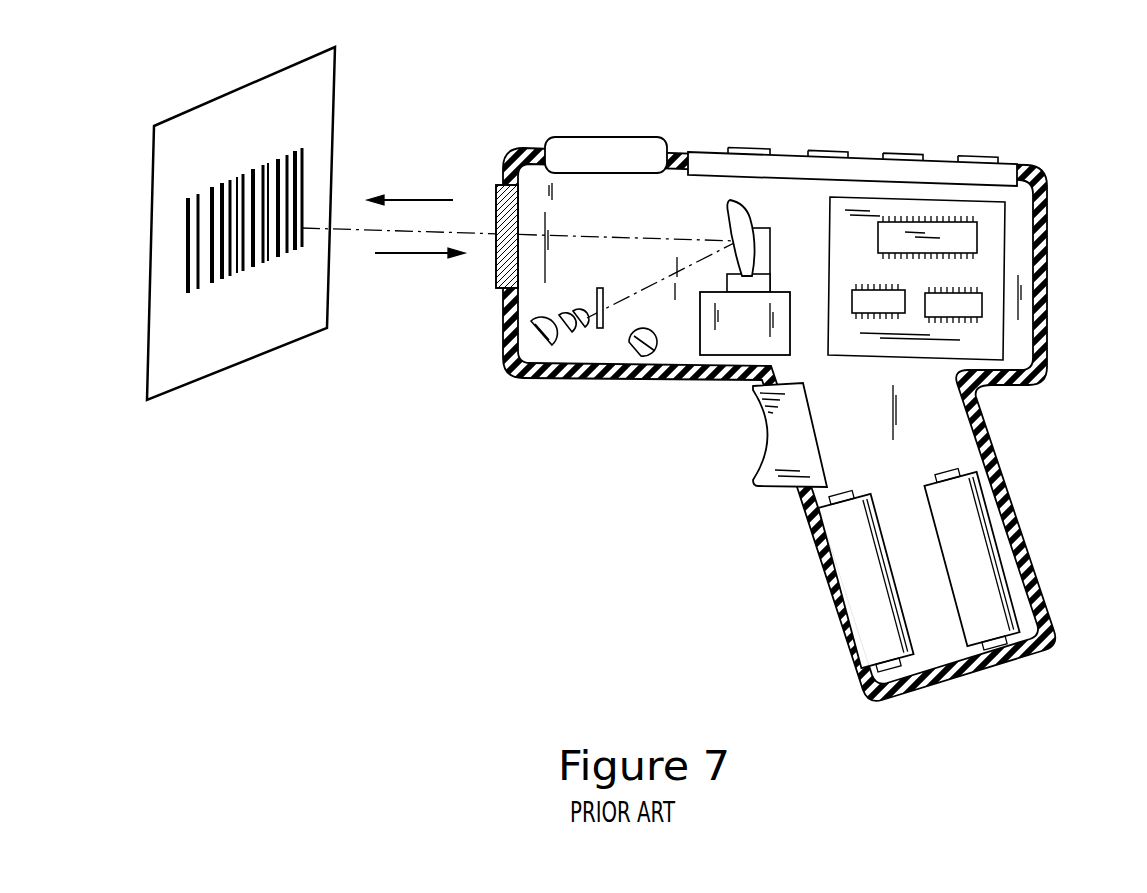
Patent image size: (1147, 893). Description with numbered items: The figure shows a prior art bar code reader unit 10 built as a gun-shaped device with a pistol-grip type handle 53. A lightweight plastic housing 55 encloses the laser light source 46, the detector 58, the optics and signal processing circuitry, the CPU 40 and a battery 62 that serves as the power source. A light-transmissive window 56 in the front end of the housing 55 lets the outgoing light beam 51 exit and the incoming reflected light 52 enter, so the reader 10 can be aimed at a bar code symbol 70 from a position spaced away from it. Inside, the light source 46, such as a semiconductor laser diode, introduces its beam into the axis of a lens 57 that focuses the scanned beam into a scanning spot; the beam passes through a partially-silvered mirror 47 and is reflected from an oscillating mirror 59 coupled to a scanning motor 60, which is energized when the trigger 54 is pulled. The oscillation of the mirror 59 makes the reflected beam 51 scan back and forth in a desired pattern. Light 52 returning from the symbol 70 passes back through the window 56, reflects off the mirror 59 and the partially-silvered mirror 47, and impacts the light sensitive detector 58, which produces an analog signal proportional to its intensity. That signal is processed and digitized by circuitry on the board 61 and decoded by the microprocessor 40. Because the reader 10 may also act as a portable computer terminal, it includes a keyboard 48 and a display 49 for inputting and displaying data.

The bar code reader unit 10 is at (612, 535).
The CPU 40 is at (900, 228).
The laser light source 46 is at (530, 338).
The partially-silvered mirror 47 is at (605, 342).
The keyboard 48 is at (940, 165).
The display 49 is at (603, 148).
The outgoing light beam 51 is at (421, 200).
The incoming reflected light 52 is at (423, 253).
The handle 53 is at (845, 612).
The trigger 54 is at (773, 480).
The housing 55 is at (1047, 302).
The light-transmissive window 56 is at (497, 205).
The lens 57 is at (577, 350).
The detector 58 is at (652, 347).
The oscillating mirror 59 is at (742, 205).
The scanning motor 60 is at (748, 343).
The board 61 is at (1003, 250).
The battery 62 is at (978, 478).
The bar code symbol 70 is at (291, 156).